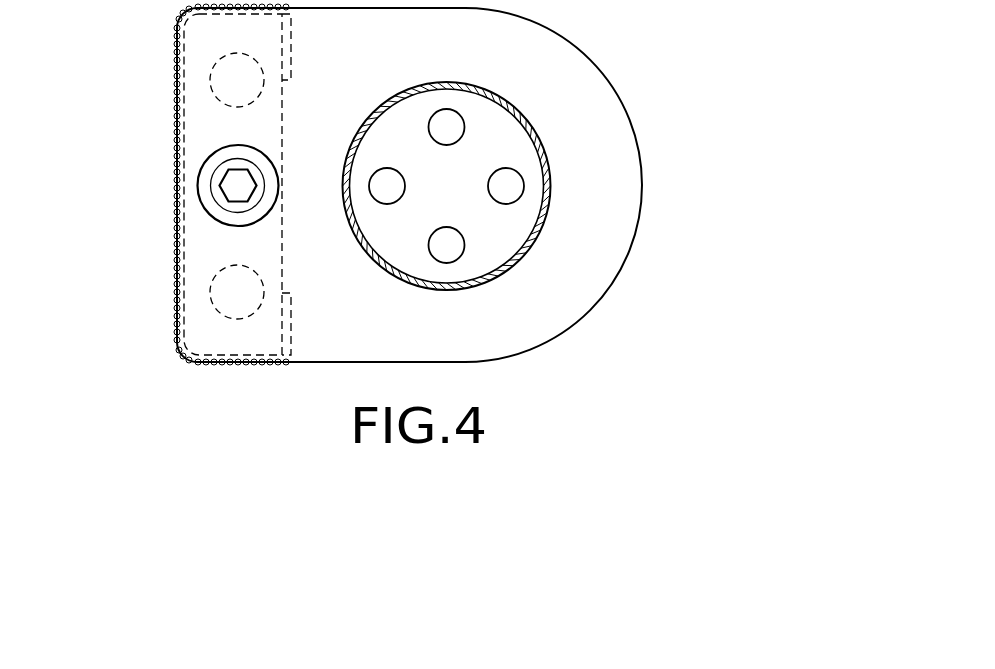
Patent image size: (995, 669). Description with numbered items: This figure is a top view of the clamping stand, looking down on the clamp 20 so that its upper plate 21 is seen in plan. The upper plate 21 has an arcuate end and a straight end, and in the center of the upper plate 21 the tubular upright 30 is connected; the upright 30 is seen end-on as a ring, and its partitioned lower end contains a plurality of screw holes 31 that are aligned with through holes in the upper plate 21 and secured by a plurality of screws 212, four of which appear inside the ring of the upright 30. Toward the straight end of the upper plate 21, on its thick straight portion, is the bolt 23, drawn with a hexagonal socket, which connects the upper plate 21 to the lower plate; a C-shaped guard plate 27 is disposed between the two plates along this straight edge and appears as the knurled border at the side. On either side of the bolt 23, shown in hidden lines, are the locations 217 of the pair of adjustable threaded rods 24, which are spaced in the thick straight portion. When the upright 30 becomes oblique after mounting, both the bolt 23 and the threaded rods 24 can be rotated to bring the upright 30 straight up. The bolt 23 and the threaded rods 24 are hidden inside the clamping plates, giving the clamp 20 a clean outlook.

The clamp 20 is at (388, 184).
The upper plate 21 is at (598, 99).
The bolt 23 is at (212, 165).
The C-shaped guard plate 27 is at (175, 294).
The through hole 217 is at (157, 186).
The adjustable threaded rods 24 is at (210, 80).
The tubular upright 30 is at (537, 256).
The screw holes 31 is at (564, 186).
The screws 212 is at (524, 186).